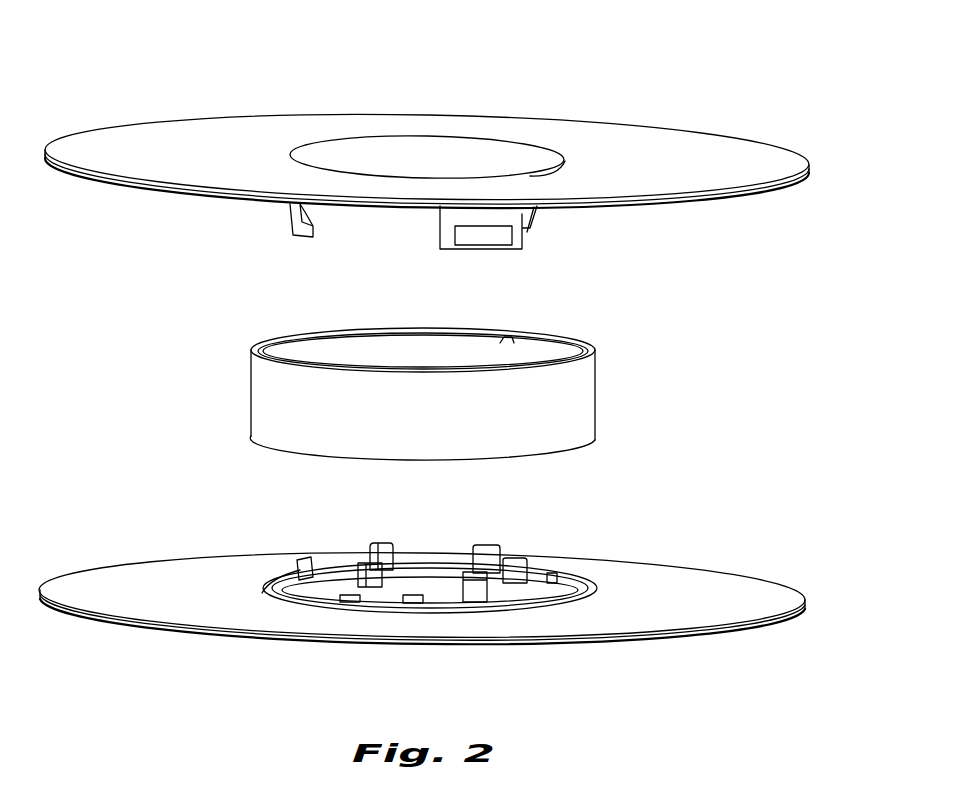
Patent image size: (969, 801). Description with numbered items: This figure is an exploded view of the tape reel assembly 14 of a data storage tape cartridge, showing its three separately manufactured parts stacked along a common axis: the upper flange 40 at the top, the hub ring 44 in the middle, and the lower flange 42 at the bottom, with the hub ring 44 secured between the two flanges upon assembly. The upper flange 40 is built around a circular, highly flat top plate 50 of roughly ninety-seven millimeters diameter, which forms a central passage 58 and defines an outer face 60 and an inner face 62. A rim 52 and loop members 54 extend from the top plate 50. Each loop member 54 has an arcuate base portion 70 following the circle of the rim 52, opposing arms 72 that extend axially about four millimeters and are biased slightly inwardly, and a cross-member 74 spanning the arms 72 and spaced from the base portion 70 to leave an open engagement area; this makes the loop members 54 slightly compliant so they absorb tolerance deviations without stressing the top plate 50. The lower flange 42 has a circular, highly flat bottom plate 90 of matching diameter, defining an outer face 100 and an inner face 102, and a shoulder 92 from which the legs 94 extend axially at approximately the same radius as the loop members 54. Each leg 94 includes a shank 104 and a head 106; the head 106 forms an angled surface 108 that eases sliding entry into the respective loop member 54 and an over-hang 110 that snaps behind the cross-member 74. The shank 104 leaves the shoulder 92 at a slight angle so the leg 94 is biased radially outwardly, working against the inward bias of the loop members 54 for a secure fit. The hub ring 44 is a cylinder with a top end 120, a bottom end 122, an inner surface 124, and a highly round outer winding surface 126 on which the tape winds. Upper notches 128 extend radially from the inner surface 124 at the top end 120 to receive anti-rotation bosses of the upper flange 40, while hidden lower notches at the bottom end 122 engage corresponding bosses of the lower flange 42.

The tape reel assembly 14 is at (596, 43).
The upper flange 40 is at (752, 140).
The lower flange 42 is at (762, 580).
The hub ring 44 is at (602, 407).
The top plate 50 is at (623, 132).
The rim 52 is at (415, 150).
The loop members 54 is at (287, 218).
The central passage 58 is at (548, 157).
The outer face 60 is at (100, 133).
The inner face 62 is at (88, 175).
The base portion 70 is at (447, 215).
The opposing arms 72 is at (528, 234).
The cross-member 74 is at (487, 248).
The bottom plate 90 is at (673, 617).
The shoulder 92 is at (412, 573).
The legs 94 is at (496, 540).
The outer face 100 is at (127, 625).
The inner face 102 is at (82, 577).
The shank 104 is at (462, 580).
The head 106 is at (470, 572).
The angled surface 108 is at (303, 553).
The over-hang 110 is at (283, 571).
The top end 120 is at (596, 350).
The bottom end 122 is at (579, 445).
The inner surface 124 is at (363, 347).
The outer winding surface 126 is at (262, 392).
The upper notches 128 is at (510, 340).